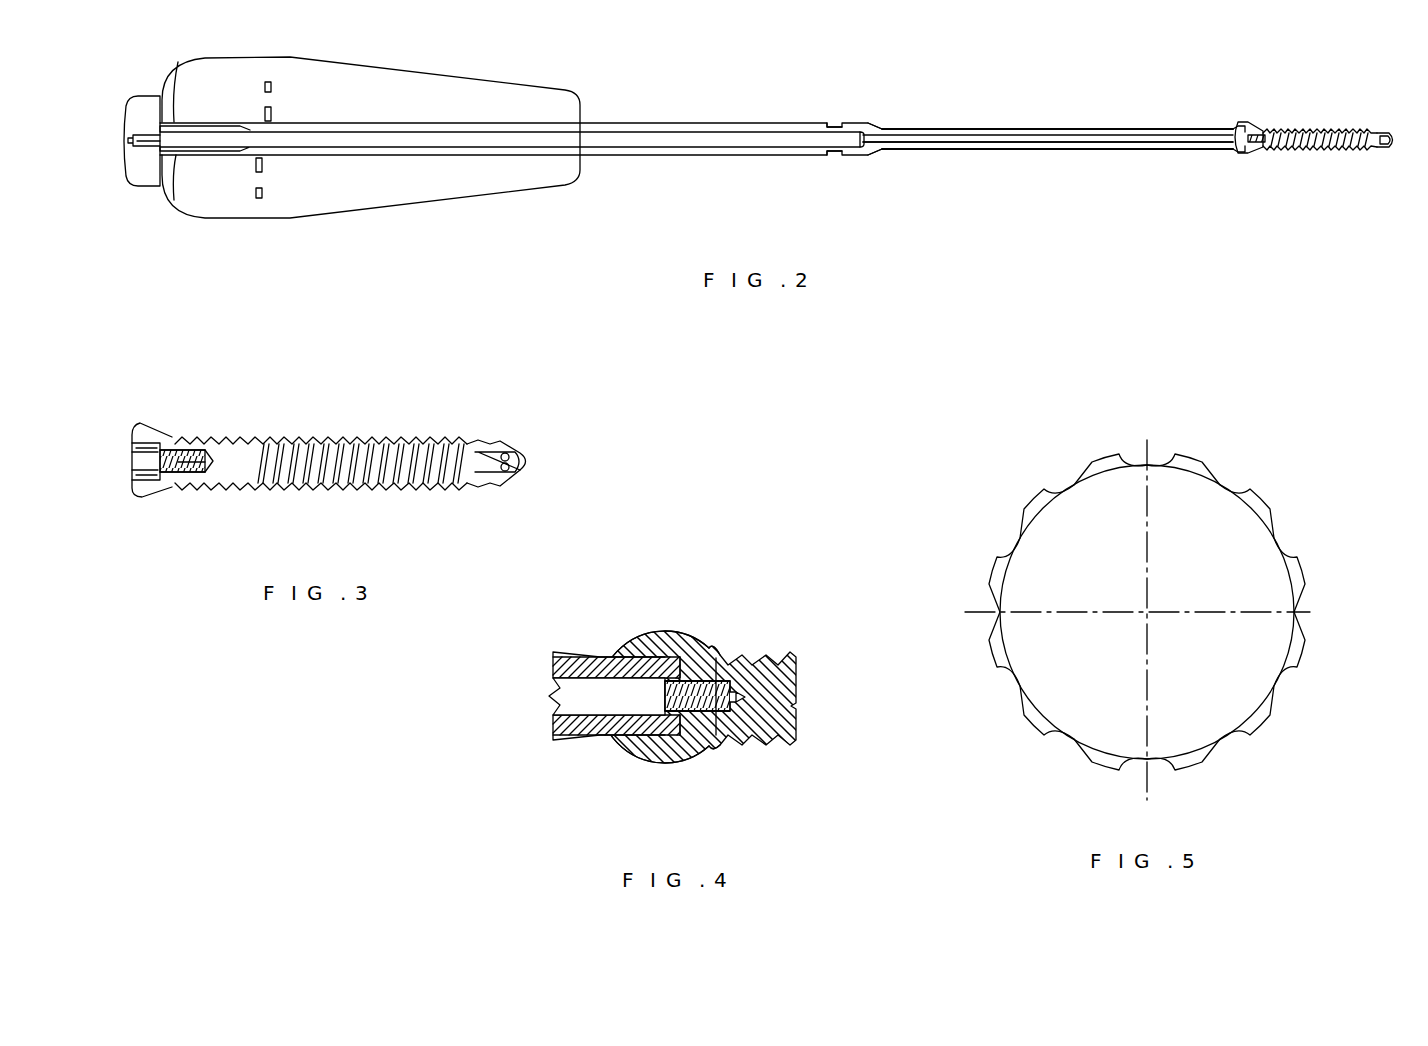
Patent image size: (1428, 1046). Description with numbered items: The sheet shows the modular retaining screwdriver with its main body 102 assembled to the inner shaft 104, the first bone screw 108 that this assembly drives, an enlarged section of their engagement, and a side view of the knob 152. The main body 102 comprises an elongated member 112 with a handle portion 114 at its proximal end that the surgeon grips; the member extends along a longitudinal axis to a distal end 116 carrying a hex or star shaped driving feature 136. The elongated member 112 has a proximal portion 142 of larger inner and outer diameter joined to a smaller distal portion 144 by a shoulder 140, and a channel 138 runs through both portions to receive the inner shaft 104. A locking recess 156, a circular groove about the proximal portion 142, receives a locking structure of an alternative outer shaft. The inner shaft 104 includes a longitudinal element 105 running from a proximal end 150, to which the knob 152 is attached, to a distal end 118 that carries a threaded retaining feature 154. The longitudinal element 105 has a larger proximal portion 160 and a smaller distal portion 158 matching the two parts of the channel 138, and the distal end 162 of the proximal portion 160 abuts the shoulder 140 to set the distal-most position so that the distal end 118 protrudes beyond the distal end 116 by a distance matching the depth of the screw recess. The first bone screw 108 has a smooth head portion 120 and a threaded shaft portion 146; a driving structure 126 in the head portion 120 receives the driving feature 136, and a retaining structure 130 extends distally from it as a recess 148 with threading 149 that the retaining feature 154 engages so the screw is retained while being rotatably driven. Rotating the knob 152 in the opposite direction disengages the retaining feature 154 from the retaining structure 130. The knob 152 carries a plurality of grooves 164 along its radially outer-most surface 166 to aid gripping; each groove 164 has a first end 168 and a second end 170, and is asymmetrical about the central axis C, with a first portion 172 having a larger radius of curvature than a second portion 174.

In FIG. 2, the main body 102 is at (750, 135).
In FIG. 2, the inner shaft 104 is at (552, 120).
In FIG. 4, the inner shaft 104 is at (568, 735).
In FIG. 2, the longitudinal element 105 is at (722, 135).
In FIG. 2, the first bone screw 108 is at (1304, 134).
In FIG. 3, the first bone screw 108 is at (312, 430).
In FIG. 4, the first bone screw 108 is at (756, 691).
In FIG. 2, the elongated member 112 is at (945, 140).
In FIG. 4, the elongated member 112 is at (545, 650).
In FIG. 2, the handle portion 114 is at (395, 90).
In FIG. 2, the distal end 116 is at (1238, 125).
In FIG. 4, the distal end 116 is at (574, 660).
In FIG. 2, the distal end 118 is at (1268, 148).
In FIG. 4, the distal end 118 is at (722, 692).
In FIG. 2, the head portion 120 is at (1245, 155).
In FIG. 3, the head portion 120 is at (150, 430).
In FIG. 4, the head portion 120 is at (650, 752).
In FIG. 3, the driving structure 126 is at (140, 482).
In FIG. 4, the driving structure 126 is at (662, 754).
In FIG. 3, the retaining structure 130 is at (183, 455).
In FIG. 4, the retaining structure 130 is at (722, 737).
In FIG. 4, the driving feature 136 is at (634, 655).
In FIG. 2, the channel 138 is at (1000, 130).
In FIG. 2, the shoulder 140 is at (880, 127).
In FIG. 2, the proximal portion 142 is at (600, 152).
In FIG. 2, the distal portion 144 is at (1095, 150).
In FIG. 2, the threaded shaft portion 146 is at (1340, 152).
In FIG. 3, the threaded shaft portion 146 is at (400, 440).
In FIG. 4, the threaded shaft portion 146 is at (790, 740).
In FIG. 3, the recess 148 is at (190, 470).
In FIG. 3, the threading 149 is at (172, 452).
In FIG. 4, the threading 149 is at (702, 742).
In FIG. 2, the proximal end 150 is at (172, 150).
In FIG. 2, the knob 152 is at (147, 100).
In FIG. 5, the knob 152 is at (1176, 571).
In FIG. 4, the retaining feature 154 is at (702, 680).
In FIG. 2, the locking recess 156 is at (828, 125).
In FIG. 2, the distal portion 158 is at (940, 150).
In FIG. 2, the proximal portion 160 is at (650, 150).
In FIG. 2, the distal end 162 is at (856, 146).
In FIG. 5, the grooves 164 is at (1155, 462).
In FIG. 5, the radially outer-most surface 166 is at (1298, 570).
In FIG. 5, the first end 168 is at (1120, 458).
In FIG. 5, the second end 170 is at (1162, 462).
In FIG. 5, the first portion 172 is at (1180, 465).
In FIG. 5, the second portion 174 is at (1096, 456).